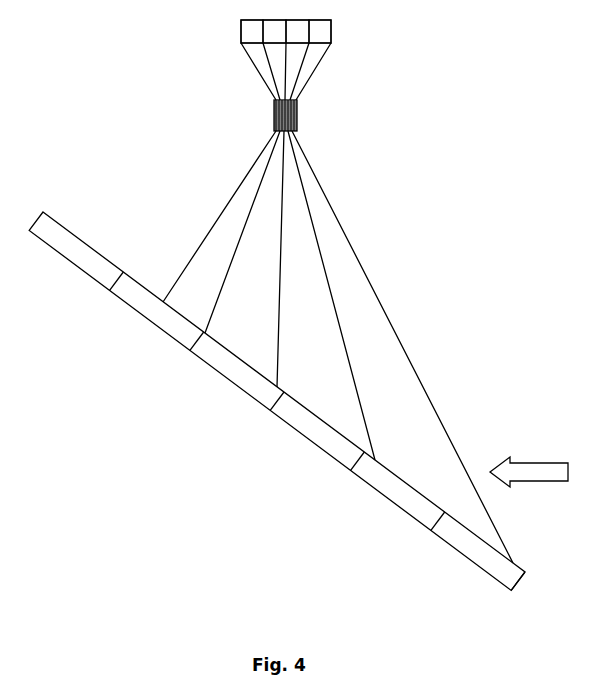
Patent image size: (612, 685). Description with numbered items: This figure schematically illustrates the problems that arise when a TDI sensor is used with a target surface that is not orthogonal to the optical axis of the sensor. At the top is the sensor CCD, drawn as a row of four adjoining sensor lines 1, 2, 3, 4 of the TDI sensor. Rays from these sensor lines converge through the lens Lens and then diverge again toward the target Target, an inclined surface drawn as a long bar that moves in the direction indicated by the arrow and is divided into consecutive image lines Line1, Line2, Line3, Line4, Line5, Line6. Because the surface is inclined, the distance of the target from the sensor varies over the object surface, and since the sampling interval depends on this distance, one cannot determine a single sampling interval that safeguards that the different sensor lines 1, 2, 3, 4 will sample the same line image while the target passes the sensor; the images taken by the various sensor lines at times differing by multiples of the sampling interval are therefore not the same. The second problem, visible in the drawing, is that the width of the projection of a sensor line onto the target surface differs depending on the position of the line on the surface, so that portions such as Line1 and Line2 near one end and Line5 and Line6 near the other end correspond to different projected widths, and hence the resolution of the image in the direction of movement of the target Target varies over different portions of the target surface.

The sensor line 1 is at (320, 31).
The sensor line 2 is at (297, 31).
The sensor line 3 is at (274, 31).
The sensor line 4 is at (252, 31).
The CCD sensor CCD is at (313, 31).
The lens Lens is at (315, 115).
The target Target is at (529, 457).
The image line Line1 is at (75, 278).
The image line Line2 is at (154, 338).
The image line Line3 is at (234, 400).
The image line Line4 is at (314, 458).
The image line Line5 is at (398, 521).
The image line Line6 is at (475, 580).